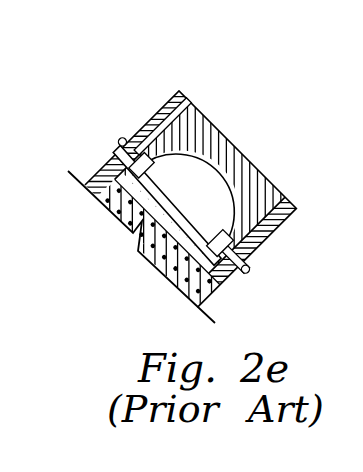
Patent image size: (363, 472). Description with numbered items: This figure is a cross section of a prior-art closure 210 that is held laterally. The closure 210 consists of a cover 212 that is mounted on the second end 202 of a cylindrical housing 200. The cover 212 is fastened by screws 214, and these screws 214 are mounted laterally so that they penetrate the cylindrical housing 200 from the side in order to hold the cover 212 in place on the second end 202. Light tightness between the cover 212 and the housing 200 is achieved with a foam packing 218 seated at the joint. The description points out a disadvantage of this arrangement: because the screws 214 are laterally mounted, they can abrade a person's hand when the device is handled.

The cylindrical housing 200 is at (148, 123).
The second end 202 is at (84, 145).
The closure 210 is at (230, 102).
The cover 212 is at (257, 163).
The screws 214 is at (251, 269).
The foam packing 218 is at (220, 273).